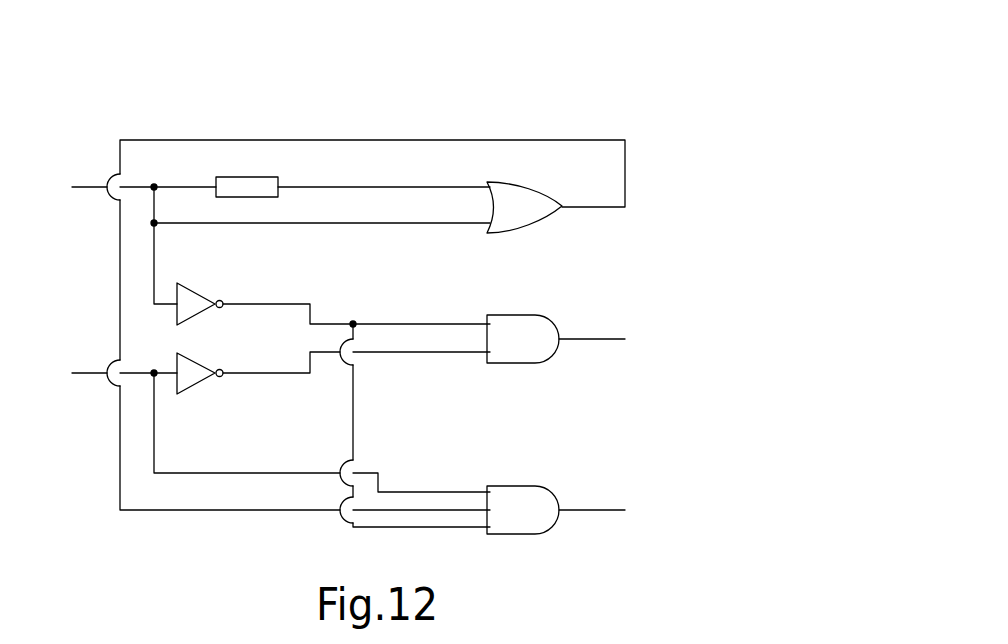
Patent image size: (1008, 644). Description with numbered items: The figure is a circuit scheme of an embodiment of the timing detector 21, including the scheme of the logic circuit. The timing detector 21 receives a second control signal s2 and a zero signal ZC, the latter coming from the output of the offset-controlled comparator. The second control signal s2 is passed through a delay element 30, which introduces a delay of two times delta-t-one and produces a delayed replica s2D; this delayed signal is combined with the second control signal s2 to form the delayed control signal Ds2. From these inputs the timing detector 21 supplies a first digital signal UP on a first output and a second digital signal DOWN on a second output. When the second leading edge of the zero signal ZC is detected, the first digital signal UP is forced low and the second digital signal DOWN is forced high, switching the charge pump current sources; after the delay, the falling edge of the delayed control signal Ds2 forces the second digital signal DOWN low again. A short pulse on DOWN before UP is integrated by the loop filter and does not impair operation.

The timing detector 21 is at (393, 328).
The delay element 30 is at (228, 177).
The second control signal s2 is at (89, 173).
The zero signal ZC is at (88, 360).
The delayed control signal s2D is at (384, 175).
The delayed control signal Ds2 is at (418, 345).
The first digital signal UP is at (556, 339).
The second digital signal DOWN is at (556, 509).